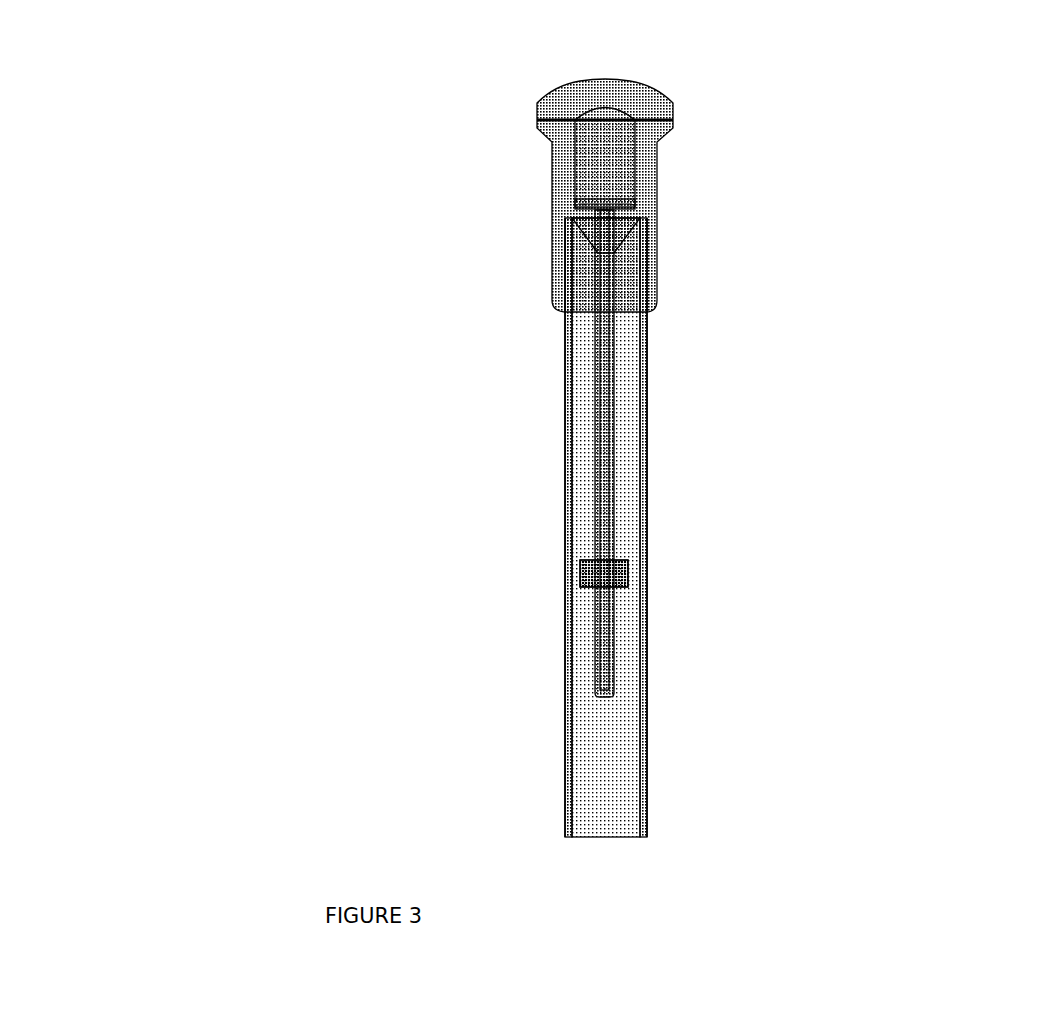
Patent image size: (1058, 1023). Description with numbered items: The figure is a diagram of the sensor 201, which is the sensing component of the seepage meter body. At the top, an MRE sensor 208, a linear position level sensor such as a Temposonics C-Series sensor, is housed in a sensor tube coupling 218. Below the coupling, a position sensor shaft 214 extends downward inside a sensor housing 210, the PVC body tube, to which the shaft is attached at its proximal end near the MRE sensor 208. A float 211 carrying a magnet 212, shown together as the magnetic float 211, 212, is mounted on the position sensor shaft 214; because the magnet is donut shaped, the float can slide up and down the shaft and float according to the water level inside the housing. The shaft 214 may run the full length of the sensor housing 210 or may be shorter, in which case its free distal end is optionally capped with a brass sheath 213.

The sensor 201 is at (692, 58).
The sensor tube coupling 218 is at (672, 177).
The MRE sensor 208 is at (600, 169).
The sensor housing 210 is at (717, 885).
The brass sheath 213 is at (143, 645).
The position sensor shaft 214 is at (598, 434).
The float 211 is at (583, 574).
The magnet 212 is at (604, 573).